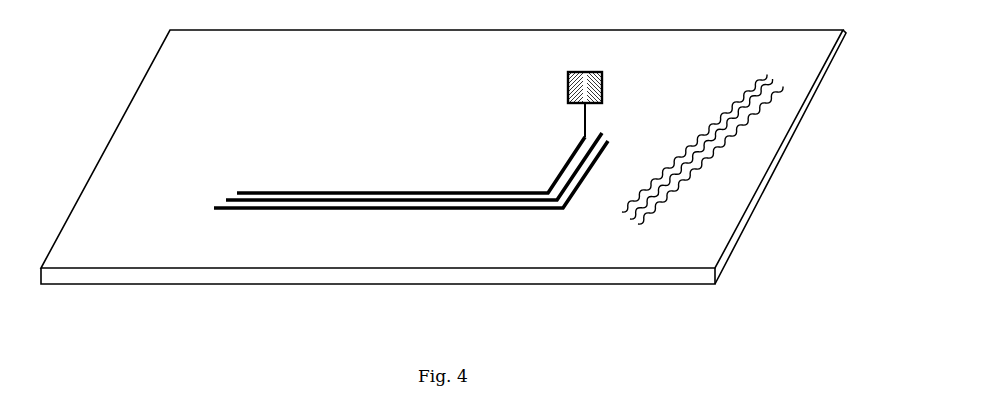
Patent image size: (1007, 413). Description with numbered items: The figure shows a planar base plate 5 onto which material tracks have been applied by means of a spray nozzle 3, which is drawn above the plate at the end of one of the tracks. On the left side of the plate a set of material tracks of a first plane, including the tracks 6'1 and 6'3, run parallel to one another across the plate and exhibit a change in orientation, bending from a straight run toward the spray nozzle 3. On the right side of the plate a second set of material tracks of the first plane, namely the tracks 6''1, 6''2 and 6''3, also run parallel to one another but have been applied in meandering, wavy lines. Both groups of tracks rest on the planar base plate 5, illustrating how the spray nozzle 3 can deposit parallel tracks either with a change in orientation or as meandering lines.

The planar base plate 5 is at (281, 292).
The spray nozzle 3 is at (560, 87).
The material track of the first plane 6'1 is at (367, 191).
The material track of the first plane 6'3 is at (360, 165).
The meandering material track of the first plane 6''1 is at (667, 170).
The meandering material track of the first plane 6''2 is at (694, 175).
The meandering material track of the first plane 6''3 is at (710, 176).